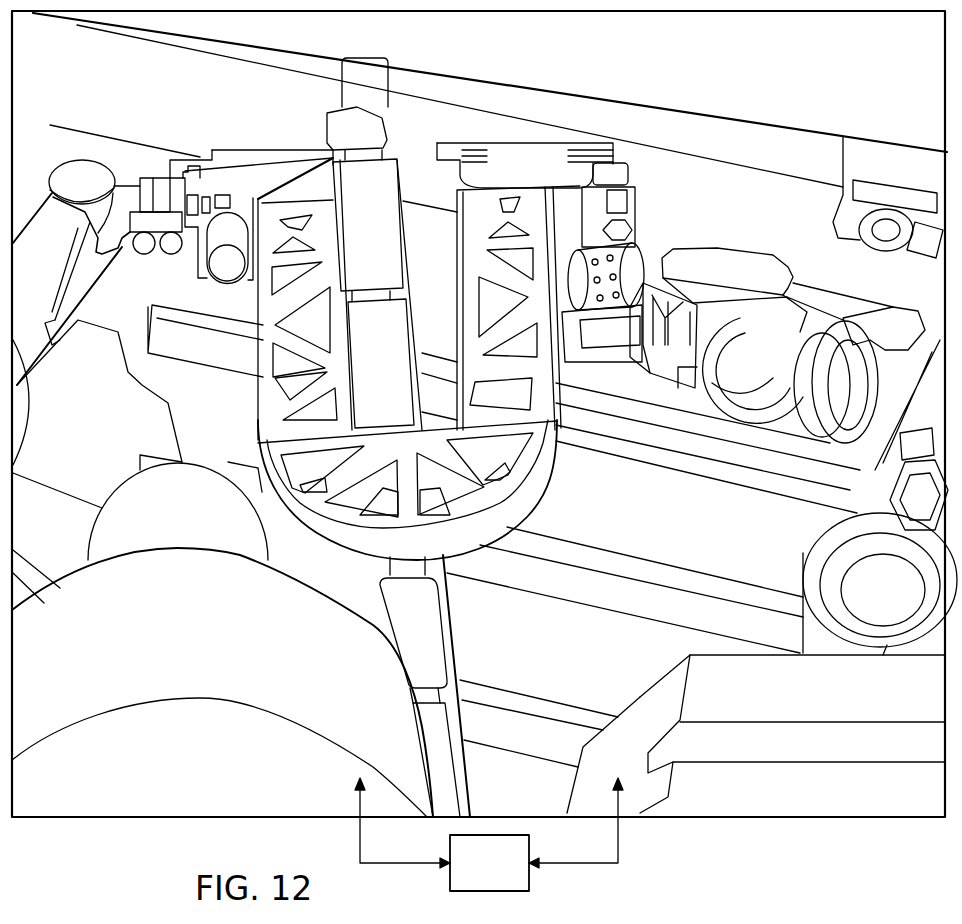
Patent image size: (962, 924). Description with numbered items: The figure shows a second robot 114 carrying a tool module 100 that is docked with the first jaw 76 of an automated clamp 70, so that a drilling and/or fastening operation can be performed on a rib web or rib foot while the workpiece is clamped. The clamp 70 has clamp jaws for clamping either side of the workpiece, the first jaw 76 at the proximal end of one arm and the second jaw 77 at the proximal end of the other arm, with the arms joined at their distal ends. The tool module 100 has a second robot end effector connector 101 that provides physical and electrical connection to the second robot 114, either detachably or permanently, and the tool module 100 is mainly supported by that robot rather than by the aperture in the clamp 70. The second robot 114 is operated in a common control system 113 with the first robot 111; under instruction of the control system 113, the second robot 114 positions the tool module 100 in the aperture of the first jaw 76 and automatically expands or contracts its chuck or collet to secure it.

The clamp 70 is at (527, 452).
The first jaw 76 is at (293, 153).
The second jaw 77 is at (463, 157).
The tool module 100 is at (227, 158).
The second robot end effector connector 101 is at (152, 178).
The first robot 111 is at (840, 478).
The control system 113 is at (467, 877).
The second robot 114 is at (68, 356).